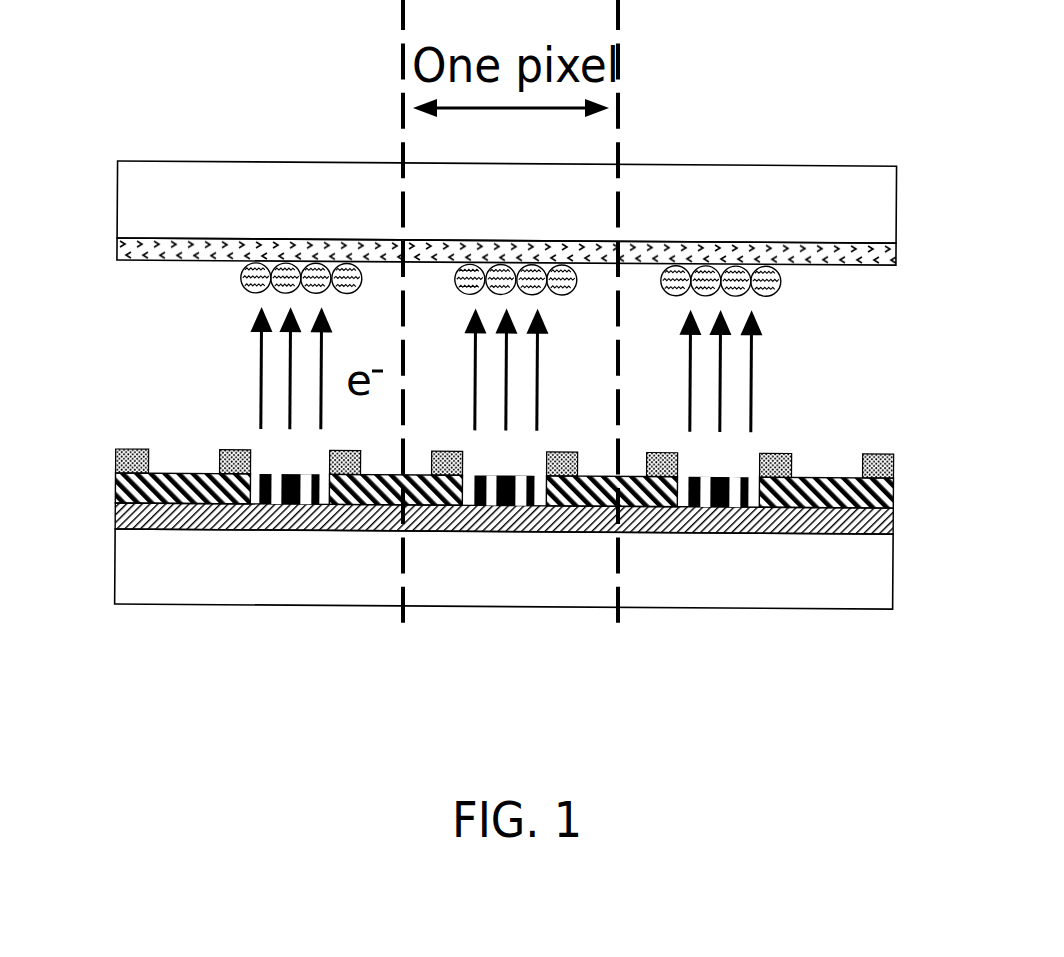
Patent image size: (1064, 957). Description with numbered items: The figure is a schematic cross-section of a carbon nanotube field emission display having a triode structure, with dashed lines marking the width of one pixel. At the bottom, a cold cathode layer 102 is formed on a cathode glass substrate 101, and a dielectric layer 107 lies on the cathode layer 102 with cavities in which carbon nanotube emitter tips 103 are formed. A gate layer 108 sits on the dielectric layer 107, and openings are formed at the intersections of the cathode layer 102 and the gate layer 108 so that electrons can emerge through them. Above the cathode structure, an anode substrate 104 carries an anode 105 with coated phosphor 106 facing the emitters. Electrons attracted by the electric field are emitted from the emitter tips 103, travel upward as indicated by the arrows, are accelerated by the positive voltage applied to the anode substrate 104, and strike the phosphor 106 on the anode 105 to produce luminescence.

The cathode glass substrate 101 is at (883, 593).
The cold cathode layer 102 is at (894, 527).
The emitter tips 103 is at (738, 477).
The anode substrate 104 is at (888, 211).
The anode 105 is at (890, 248).
The coated phosphor 106 is at (782, 283).
The dielectric layer 107 is at (894, 500).
The gate layer 108 is at (894, 458).